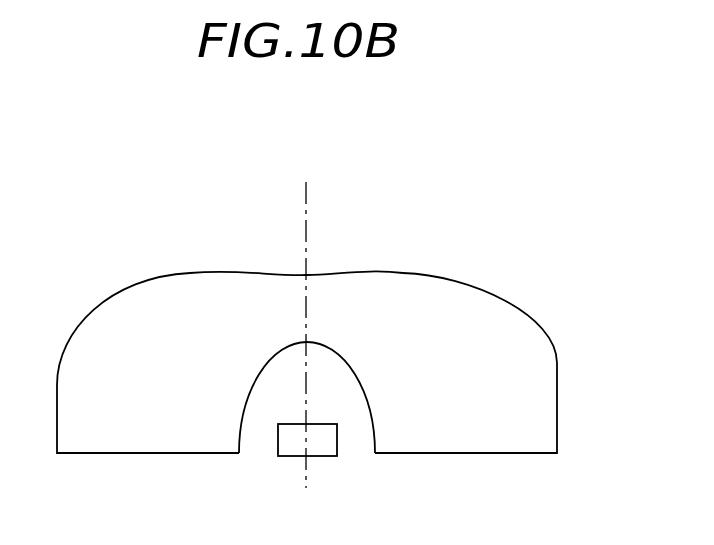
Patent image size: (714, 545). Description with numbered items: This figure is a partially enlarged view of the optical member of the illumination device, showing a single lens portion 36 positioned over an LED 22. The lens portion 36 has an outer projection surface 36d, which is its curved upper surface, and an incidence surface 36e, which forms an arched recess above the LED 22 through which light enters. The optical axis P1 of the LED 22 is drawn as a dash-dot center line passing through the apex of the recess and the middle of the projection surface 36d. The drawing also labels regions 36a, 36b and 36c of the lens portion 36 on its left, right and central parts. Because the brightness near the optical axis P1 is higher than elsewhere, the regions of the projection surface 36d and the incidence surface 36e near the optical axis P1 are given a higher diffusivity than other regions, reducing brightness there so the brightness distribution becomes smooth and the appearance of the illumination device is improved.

The lens portion 36 is at (385, 285).
The left portion of lens 36a is at (100, 348).
The right portion of lens 36b is at (487, 338).
The recess of lens 36c is at (283, 372).
The projection surface 36d is at (173, 277).
The incidence surface 36e is at (369, 414).
The LED 22 is at (293, 437).
The optical axis P1 is at (306, 317).